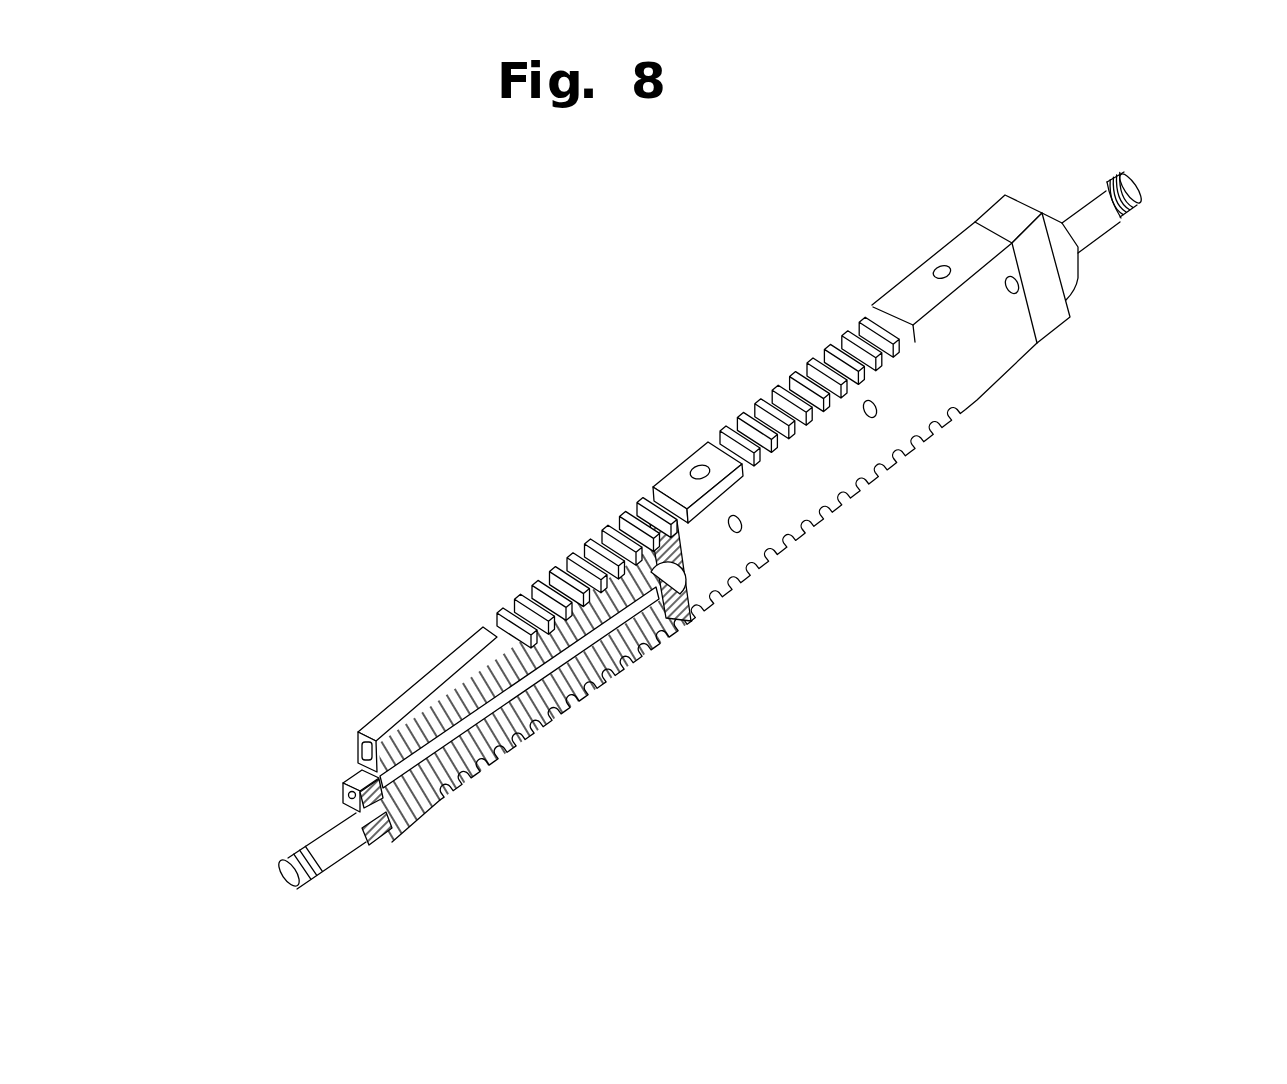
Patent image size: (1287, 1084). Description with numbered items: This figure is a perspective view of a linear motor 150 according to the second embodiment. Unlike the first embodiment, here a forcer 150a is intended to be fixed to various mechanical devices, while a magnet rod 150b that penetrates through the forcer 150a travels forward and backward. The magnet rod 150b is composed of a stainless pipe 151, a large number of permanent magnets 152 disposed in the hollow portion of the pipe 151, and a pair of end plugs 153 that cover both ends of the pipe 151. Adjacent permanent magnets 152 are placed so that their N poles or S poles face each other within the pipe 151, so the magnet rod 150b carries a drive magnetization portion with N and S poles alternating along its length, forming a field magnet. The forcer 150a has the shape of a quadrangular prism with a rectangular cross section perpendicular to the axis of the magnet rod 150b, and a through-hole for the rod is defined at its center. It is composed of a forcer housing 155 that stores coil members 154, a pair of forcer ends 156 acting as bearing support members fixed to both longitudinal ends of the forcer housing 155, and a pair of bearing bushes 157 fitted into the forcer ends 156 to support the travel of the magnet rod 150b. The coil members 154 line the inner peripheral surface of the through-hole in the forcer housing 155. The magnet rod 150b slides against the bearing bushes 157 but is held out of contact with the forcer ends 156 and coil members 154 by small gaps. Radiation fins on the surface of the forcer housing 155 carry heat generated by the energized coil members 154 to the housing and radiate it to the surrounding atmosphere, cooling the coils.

The linear motor 150 is at (807, 339).
The forcer 150a is at (488, 612).
The magnet rod 150b is at (1084, 209).
The stainless pipe 151 is at (352, 845).
The permanent magnets 152 is at (462, 748).
The end plugs 153 is at (1139, 204).
The coil members 154 is at (612, 664).
The forcer housing 155 is at (678, 477).
The forcer ends 156 is at (380, 727).
The bearing bushes 157 is at (382, 840).